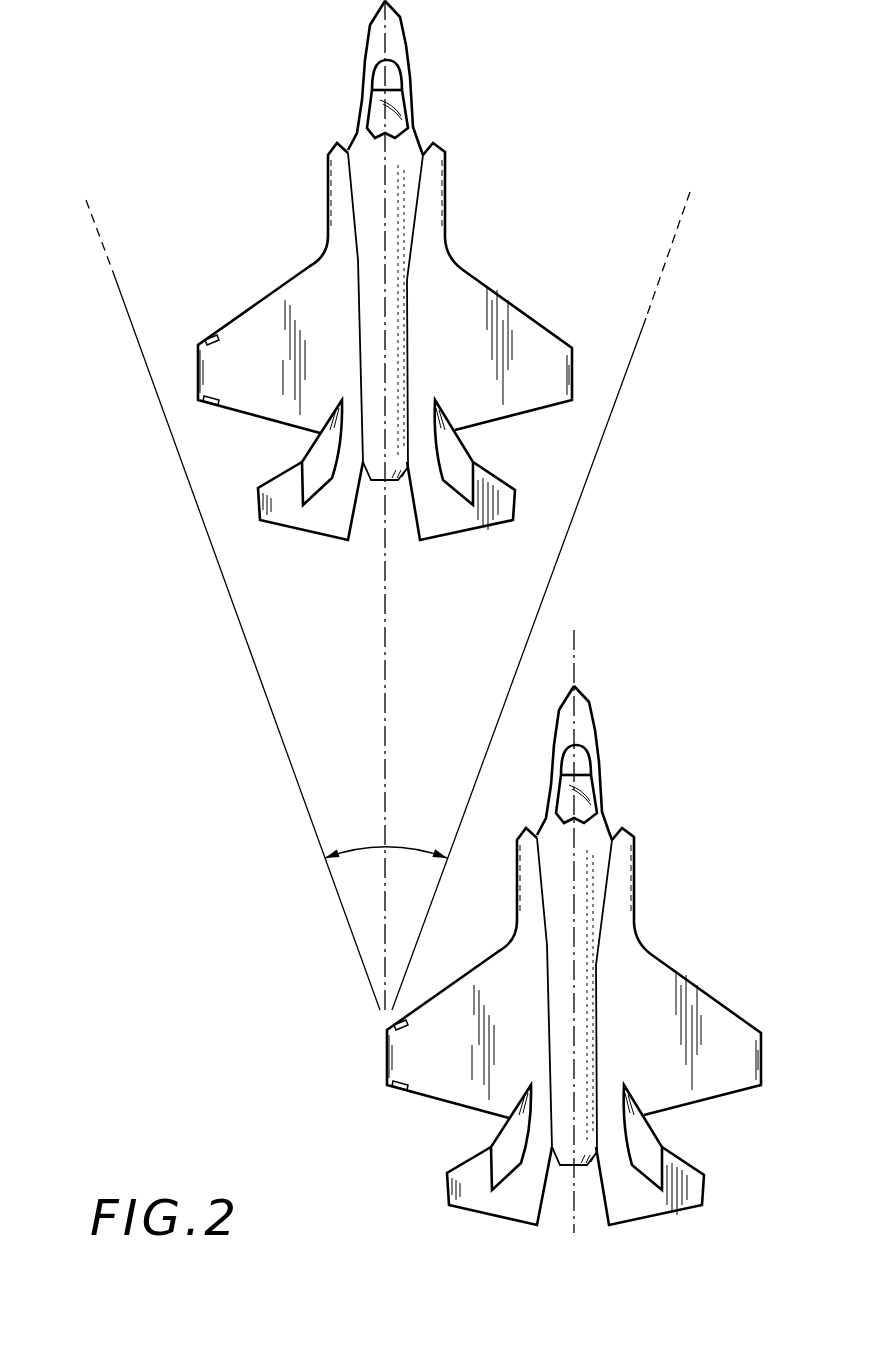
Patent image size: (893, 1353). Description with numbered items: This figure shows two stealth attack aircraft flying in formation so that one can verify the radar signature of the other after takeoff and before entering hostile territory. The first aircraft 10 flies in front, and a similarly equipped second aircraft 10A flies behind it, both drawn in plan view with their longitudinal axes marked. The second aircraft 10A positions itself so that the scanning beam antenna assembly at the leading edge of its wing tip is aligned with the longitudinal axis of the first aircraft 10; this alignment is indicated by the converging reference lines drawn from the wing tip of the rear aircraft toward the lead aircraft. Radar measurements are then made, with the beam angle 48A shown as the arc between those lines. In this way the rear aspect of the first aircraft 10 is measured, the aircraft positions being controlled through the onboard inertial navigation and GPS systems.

The aircraft 10 is at (340, 270).
The second aircraft 10A is at (530, 955).
The beam angle 48A is at (354, 842).